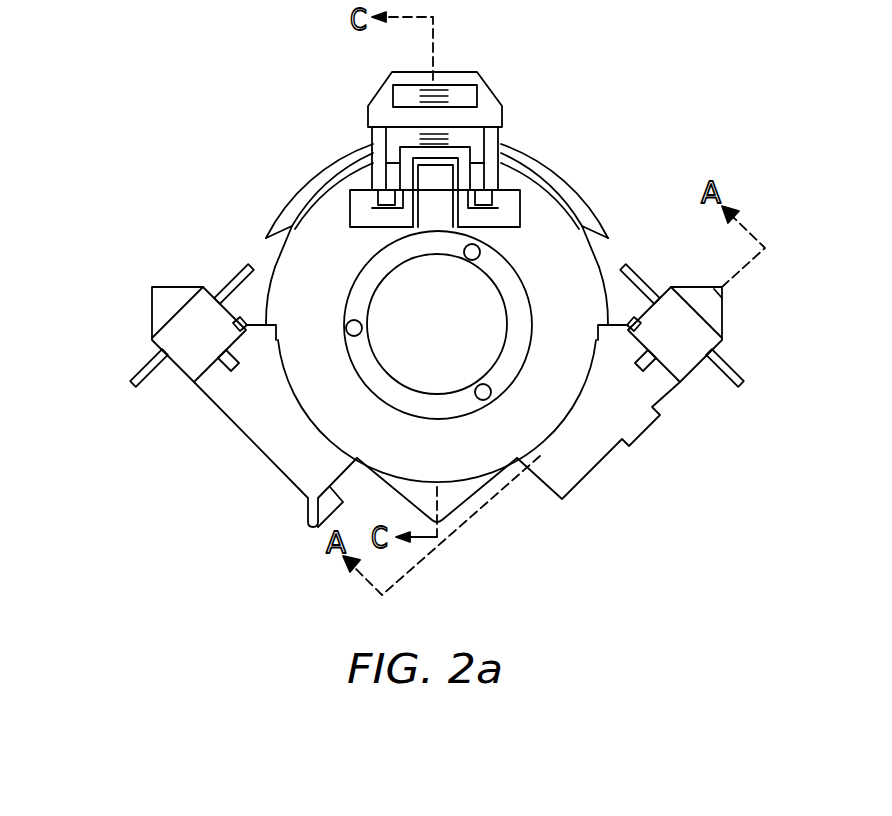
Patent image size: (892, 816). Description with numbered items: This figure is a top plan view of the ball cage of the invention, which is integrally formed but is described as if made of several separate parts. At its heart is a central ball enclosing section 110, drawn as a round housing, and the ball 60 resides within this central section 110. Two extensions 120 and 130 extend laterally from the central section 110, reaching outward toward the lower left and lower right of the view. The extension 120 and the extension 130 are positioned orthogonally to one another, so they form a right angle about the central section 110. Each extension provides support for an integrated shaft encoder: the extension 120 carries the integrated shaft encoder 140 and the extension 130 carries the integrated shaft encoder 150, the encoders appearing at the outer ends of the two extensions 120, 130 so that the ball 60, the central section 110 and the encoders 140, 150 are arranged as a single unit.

The ball 60 is at (450, 335).
The central ball enclosing section 110 is at (318, 230).
The extension 120 is at (253, 420).
The extension 130 is at (637, 428).
The integrated shaft encoder 140 is at (168, 297).
The integrated shaft encoder 150 is at (713, 312).